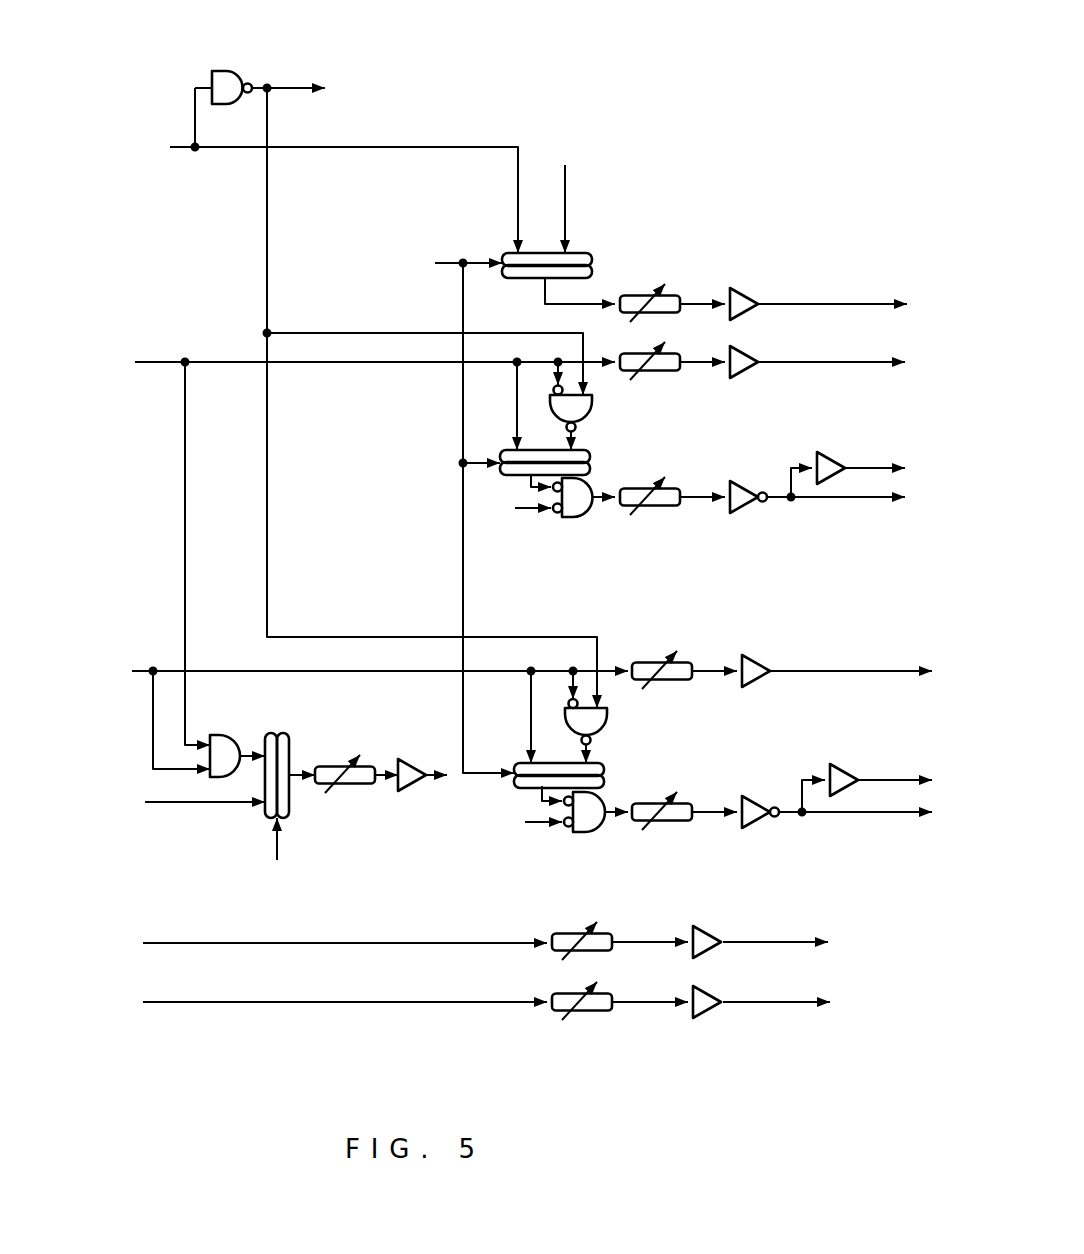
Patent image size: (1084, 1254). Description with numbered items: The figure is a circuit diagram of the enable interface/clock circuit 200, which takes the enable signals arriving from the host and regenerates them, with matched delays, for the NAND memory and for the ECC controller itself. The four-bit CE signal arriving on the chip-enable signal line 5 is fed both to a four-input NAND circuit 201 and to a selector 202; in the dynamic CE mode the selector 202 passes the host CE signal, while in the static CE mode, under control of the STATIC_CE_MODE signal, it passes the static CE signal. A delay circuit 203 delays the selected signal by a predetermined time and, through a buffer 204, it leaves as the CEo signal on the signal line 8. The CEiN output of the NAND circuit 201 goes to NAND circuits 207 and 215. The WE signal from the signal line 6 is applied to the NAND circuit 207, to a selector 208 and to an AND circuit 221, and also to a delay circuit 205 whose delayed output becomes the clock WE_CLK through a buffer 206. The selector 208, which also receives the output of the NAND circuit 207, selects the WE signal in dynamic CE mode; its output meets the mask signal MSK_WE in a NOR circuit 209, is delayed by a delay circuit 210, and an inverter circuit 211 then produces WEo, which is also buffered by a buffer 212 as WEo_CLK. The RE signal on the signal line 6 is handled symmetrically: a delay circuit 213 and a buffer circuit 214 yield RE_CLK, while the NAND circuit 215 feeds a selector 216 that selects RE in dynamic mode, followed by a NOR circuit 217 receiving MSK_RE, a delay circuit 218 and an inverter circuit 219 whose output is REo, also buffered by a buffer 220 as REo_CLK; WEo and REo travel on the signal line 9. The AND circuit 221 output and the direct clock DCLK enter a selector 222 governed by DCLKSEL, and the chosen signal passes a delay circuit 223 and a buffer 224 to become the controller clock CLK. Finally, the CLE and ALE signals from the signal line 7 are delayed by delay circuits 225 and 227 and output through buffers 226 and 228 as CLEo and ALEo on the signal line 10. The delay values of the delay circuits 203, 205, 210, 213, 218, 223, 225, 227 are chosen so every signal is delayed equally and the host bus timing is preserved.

The enable interface/clock circuit 200 is at (472, 104).
The 4-input NAND circuit 201 is at (221, 71).
The selector 202 is at (593, 256).
The delay circuit 203 is at (683, 295).
The output buffer 204 is at (746, 290).
The delay circuit 205 is at (678, 373).
The buffer 206 is at (752, 372).
The NAND circuit 207 is at (592, 412).
The selector 208 is at (590, 458).
The NOR circuit 209 is at (588, 520).
The delay circuit 210 is at (665, 508).
The inverter circuit 211 is at (745, 512).
The buffer 212 is at (815, 455).
The delay circuit 213 is at (690, 683).
The buffer circuit 214 is at (758, 657).
The NAND circuit 215 is at (607, 723).
The selector 216 is at (604, 770).
The NOR circuit 217 is at (604, 835).
The delay circuit 218 is at (690, 822).
The inverter circuit 219 is at (755, 826).
The buffer 220 is at (828, 770).
The AND circuit 221 is at (226, 734).
The selector 222 is at (291, 745).
The delay circuit 223 is at (342, 787).
The buffer 224 is at (412, 760).
The delay circuit 225 is at (606, 950).
The buffer 226 is at (713, 952).
The delay circuit 227 is at (602, 1010).
The buffer 228 is at (712, 1012).
The chip-enable signal line 5 is at (183, 150).
The signal line 6 is at (155, 365).
The signal line 7 is at (185, 945).
The signal line 8 is at (872, 305).
The signal line 9 is at (820, 500).
The signal line 10 is at (782, 943).